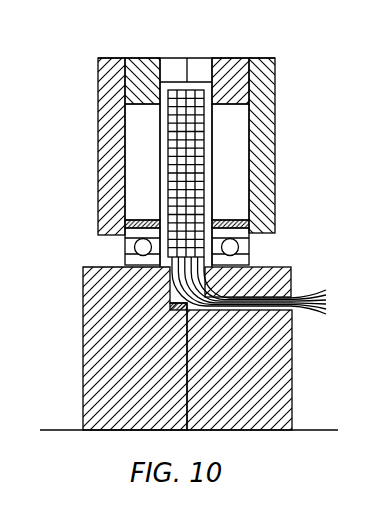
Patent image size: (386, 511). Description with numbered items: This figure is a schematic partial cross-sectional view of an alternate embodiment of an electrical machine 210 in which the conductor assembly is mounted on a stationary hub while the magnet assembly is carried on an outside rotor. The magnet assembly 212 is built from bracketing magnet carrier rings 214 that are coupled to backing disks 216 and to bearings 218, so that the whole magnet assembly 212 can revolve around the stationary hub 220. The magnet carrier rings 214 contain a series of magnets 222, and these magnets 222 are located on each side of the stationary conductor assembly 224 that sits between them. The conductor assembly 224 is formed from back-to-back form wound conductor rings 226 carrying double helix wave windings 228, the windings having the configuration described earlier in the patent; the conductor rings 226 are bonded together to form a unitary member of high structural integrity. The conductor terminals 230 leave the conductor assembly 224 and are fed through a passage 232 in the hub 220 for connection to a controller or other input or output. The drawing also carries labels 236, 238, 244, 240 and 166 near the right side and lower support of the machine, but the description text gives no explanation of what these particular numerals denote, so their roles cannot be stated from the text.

The electrical machine 210 is at (96, 61).
The magnet assembly 212 is at (275, 78).
The magnet carrier rings 214 is at (275, 103).
The backing disks 216 is at (275, 140).
The bearings 218 is at (275, 216).
The stationary hub 220 is at (276, 266).
The magnets 222 is at (123, 130).
The conductor assembly 224 is at (107, 265).
The conductor rings 226 is at (206, 186).
The double helix wave windings 228 is at (206, 203).
The conductor terminals 230 is at (306, 295).
The passage 232 is at (172, 302).
The housing element 236 is at (375, 102).
The housing element 238 is at (371, 141).
The housing element 244 is at (371, 179).
The wire exit 240 is at (372, 331).
The base support 166 is at (385, 392).